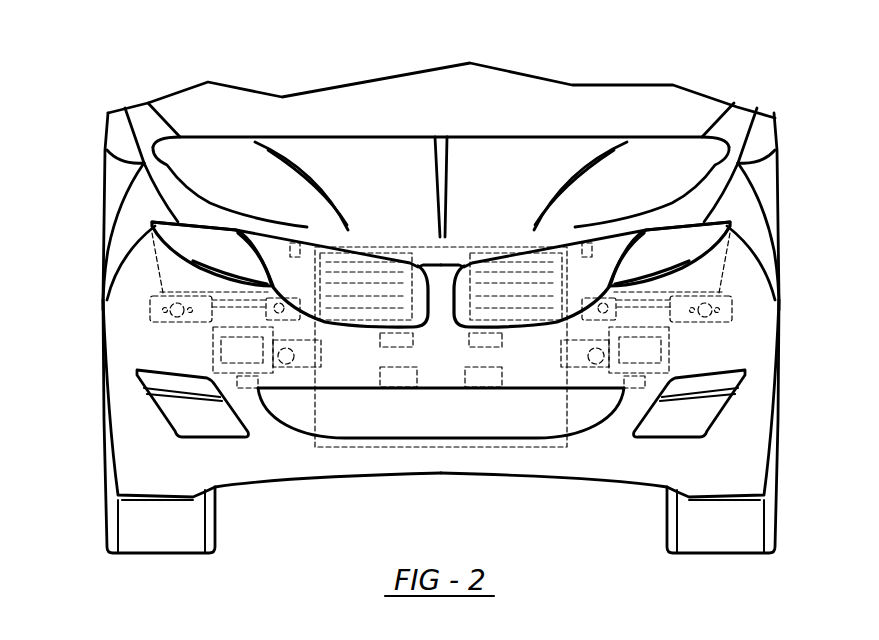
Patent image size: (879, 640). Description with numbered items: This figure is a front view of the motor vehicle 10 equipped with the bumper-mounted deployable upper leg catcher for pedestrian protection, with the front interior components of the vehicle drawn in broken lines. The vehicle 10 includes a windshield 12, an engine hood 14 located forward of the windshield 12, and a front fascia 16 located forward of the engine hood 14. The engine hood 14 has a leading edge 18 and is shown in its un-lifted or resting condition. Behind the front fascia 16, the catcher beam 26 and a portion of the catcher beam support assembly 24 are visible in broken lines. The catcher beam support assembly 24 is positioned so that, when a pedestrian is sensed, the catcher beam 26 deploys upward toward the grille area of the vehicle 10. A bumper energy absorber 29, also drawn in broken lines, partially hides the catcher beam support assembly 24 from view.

The motor vehicle 10 is at (95, 139).
The windshield 12 is at (647, 107).
The engine hood 14 is at (282, 190).
The front fascia 16 is at (243, 455).
The leading edge 18 is at (457, 240).
The catcher beam support assembly 24 is at (343, 293).
The catcher beam 26 is at (380, 283).
The bumper energy absorber 29 is at (438, 283).